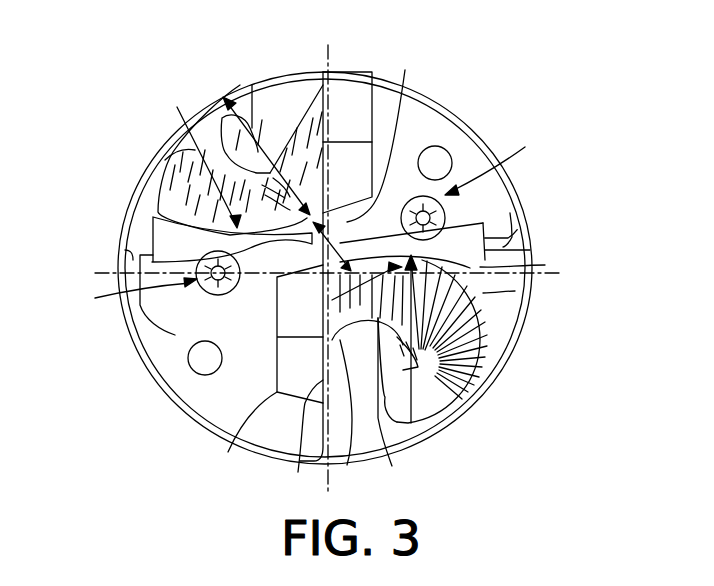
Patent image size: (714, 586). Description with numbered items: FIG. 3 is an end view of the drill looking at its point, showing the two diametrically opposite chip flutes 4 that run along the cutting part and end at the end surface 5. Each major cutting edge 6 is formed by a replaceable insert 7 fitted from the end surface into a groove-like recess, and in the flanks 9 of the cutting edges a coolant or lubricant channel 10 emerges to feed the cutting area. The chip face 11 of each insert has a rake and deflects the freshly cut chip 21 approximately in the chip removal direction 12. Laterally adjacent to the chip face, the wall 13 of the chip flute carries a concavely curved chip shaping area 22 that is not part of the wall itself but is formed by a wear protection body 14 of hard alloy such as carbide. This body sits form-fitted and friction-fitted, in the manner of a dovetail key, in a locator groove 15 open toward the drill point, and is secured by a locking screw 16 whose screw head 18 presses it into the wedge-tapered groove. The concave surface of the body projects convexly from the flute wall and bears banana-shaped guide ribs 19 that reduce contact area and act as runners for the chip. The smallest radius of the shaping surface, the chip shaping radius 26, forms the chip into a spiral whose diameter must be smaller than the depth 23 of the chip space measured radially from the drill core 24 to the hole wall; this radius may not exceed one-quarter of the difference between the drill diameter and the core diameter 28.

The chip flute 4 is at (292, 87).
The end surface 5 is at (220, 308).
The major cutting edge 6 is at (301, 441).
The replaceable insert 7 is at (345, 87).
The flank 9 is at (418, 127).
The coolant or lubricant channel 10 is at (437, 152).
The chip face 11 is at (352, 421).
The chip removal direction 12 is at (396, 409).
The chip flute wall 13 is at (133, 253).
The wear protection body 14 is at (150, 230).
The locator groove 15 is at (150, 240).
The locking screw 16 is at (309, 219).
The screw head 18 is at (210, 288).
The guide rib 19 is at (160, 213).
The chip 21 is at (190, 175).
The chip shaping area 22 is at (533, 333).
The depth of the chip space 23 is at (257, 127).
The drill core 24 is at (388, 130).
The chip shaping radius 26 is at (435, 423).
The core diameter 28 is at (277, 277).